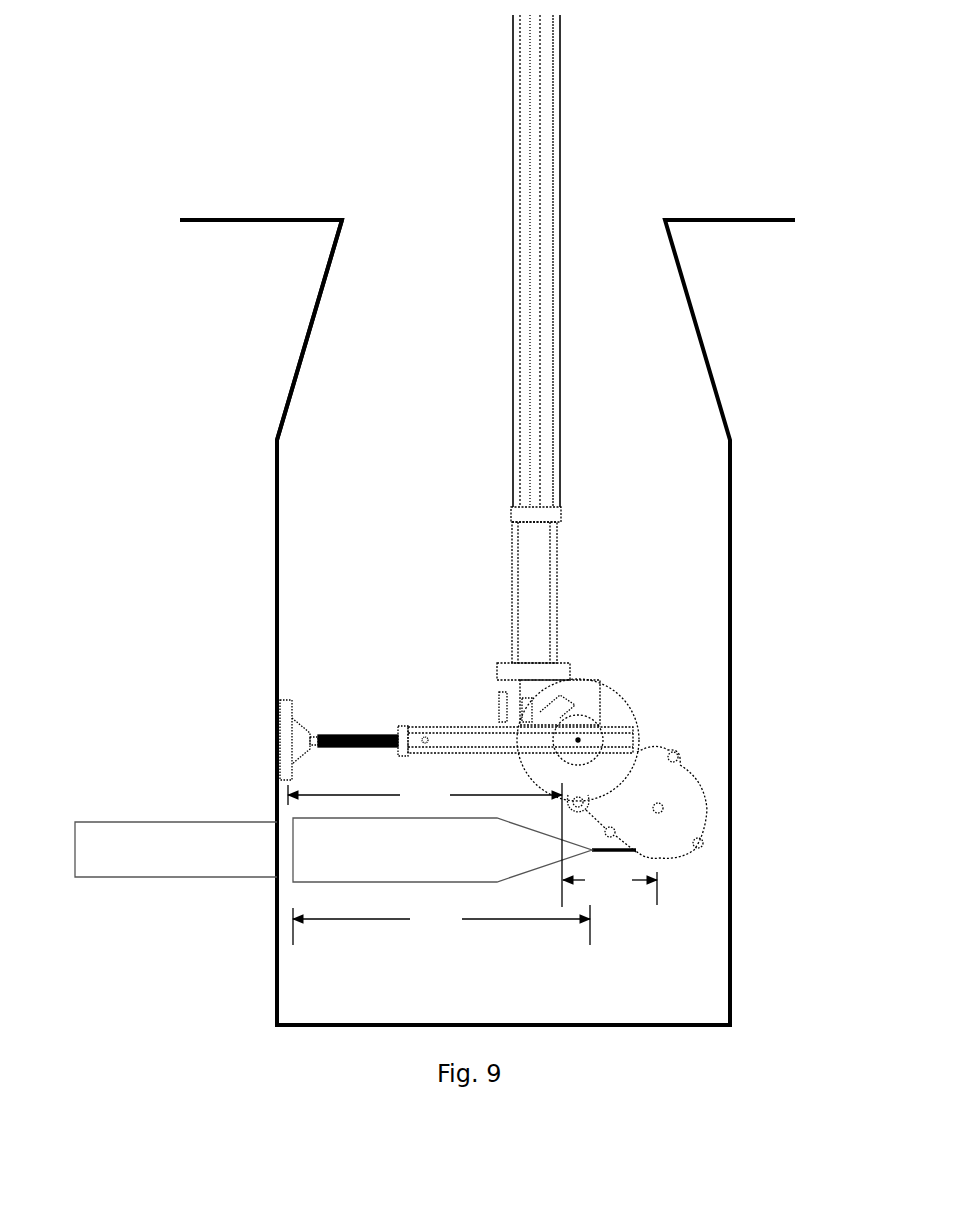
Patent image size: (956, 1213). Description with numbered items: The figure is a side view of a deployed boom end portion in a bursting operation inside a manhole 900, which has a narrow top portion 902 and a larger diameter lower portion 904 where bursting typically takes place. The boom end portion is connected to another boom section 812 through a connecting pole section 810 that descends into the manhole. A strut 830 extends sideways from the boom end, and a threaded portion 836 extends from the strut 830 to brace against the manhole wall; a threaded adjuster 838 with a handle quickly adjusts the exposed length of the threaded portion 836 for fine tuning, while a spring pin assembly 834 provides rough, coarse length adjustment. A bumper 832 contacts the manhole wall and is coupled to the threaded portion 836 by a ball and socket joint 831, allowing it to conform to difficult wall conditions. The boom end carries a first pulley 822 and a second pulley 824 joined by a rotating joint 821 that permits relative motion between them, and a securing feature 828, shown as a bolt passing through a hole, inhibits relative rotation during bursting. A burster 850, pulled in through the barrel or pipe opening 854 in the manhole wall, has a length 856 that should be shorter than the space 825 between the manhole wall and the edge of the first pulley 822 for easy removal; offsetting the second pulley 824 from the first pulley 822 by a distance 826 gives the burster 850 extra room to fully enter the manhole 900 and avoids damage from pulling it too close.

The manhole 900 is at (275, 553).
The narrow top portion 902 is at (342, 220).
The larger diameter lower portion 904 is at (280, 478).
The boom section 812 is at (557, 230).
The lower pole segment 810 is at (552, 607).
The spring pin assembly 834 is at (505, 703).
The first pulley 822 is at (610, 692).
The rotating joint 821 is at (580, 740).
The securing feature 828 is at (580, 797).
The second pulley 824 is at (695, 782).
The bumper 832 is at (282, 703).
The ball and socket joint 831 is at (310, 742).
The threaded portion 836 is at (370, 735).
The threaded adjuster 838 is at (405, 733).
The strut 830 is at (496, 740).
The burster 850 is at (305, 848).
The barrel 854 is at (125, 853).
The space 825 is at (425, 845).
The distance 826 is at (610, 886).
The length 856 is at (441, 925).